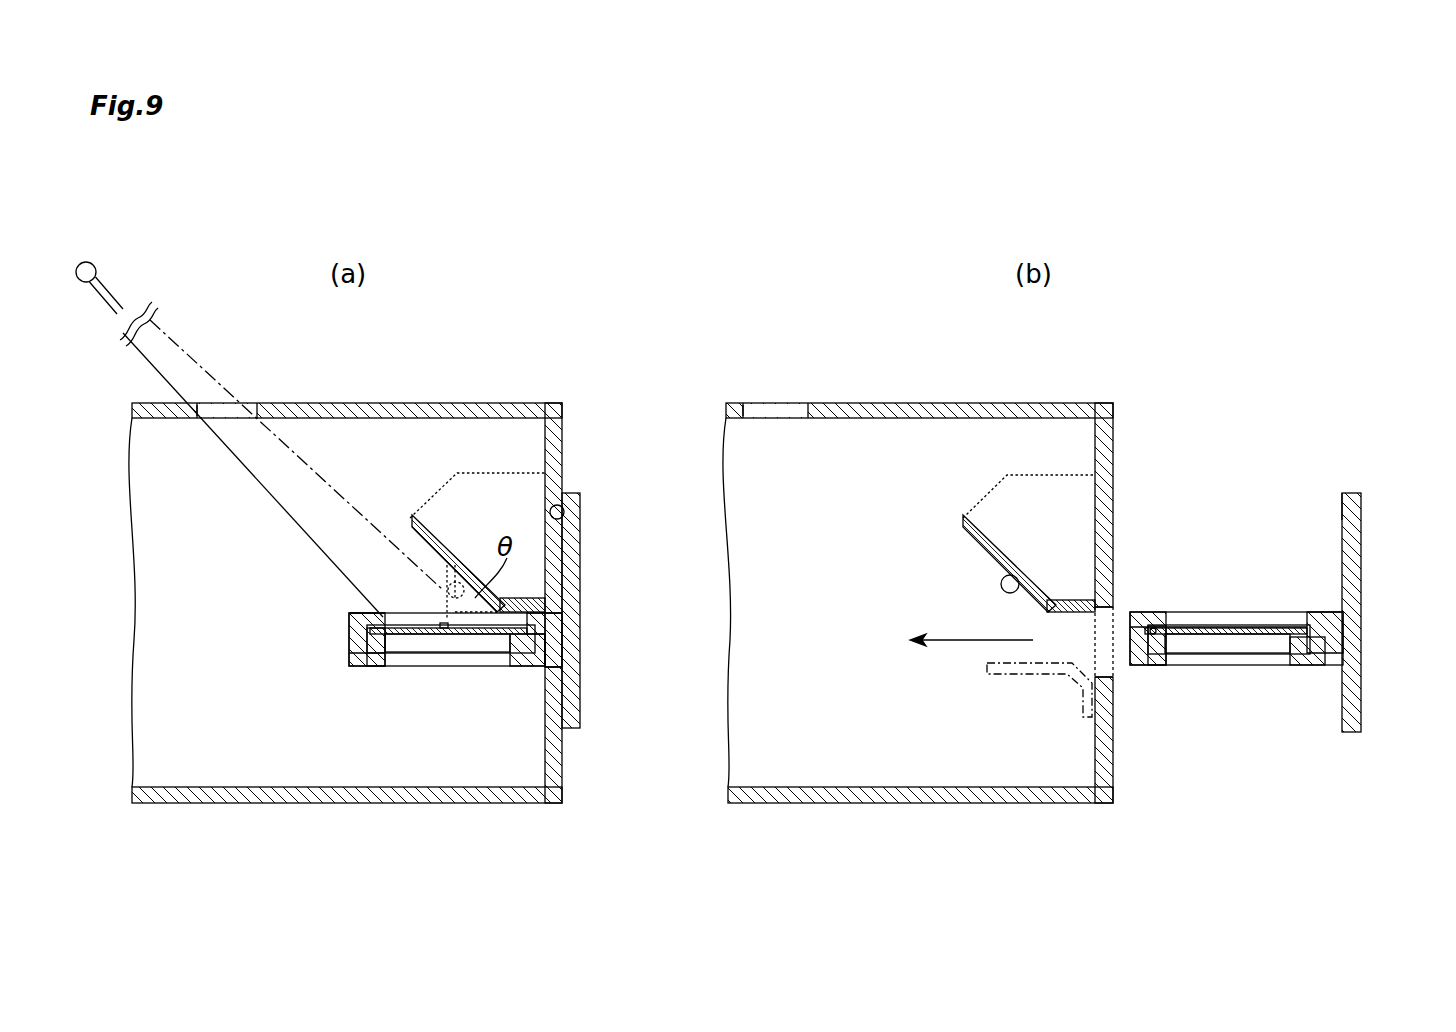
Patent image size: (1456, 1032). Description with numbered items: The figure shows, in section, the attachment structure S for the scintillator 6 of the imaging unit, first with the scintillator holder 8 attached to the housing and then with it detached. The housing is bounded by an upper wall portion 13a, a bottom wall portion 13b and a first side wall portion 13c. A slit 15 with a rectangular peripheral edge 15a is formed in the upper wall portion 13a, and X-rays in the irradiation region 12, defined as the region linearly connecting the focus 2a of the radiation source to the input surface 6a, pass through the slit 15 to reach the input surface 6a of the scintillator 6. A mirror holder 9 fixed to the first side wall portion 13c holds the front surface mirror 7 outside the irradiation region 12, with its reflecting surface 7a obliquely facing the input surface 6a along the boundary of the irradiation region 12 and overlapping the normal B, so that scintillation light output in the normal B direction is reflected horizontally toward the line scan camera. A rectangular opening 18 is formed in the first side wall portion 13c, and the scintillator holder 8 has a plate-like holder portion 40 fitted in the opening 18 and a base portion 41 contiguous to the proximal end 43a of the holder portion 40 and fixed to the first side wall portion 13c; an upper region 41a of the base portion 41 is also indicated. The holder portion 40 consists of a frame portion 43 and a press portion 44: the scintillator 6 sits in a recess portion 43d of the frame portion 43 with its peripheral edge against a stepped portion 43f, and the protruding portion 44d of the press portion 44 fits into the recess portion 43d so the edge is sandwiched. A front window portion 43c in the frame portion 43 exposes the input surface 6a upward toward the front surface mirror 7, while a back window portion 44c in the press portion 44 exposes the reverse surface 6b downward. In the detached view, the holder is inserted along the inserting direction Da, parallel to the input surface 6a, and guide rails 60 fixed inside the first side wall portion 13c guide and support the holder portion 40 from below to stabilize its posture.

The focus 2a is at (88, 262).
The irradiation region 12 is at (270, 460).
The upper wall portion 13a is at (370, 403).
The bottom wall portion 13b is at (345, 803).
The first side wall portion 13c is at (555, 770).
The slit 15 is at (228, 418).
The peripheral edge 15a is at (257, 410).
The opening 18 is at (565, 672).
The mirror holder 9 is at (540, 473).
The front surface mirror 7 is at (426, 552).
The reflecting surface 7a is at (460, 582).
The scintillator 6 is at (491, 704).
The input surface 6a is at (397, 624).
The reverse surface 6b is at (422, 654).
The holder portion 40 is at (775, 676).
The base portion 41 is at (584, 601).
The upper portion of mounting plate 41a is at (565, 510).
The frame portion 43 is at (349, 631).
The proximal end 43a is at (545, 632).
The front window portion 43c is at (505, 598).
The recess portion 43d is at (370, 610).
The stepped portion 43f is at (1160, 632).
The press portion 44 is at (349, 658).
The back window portion 44c is at (520, 670).
The protruding portion 44d is at (378, 667).
The guide rail 60 is at (1030, 677).
The scintillator holder 8 is at (1376, 463).
The normal B is at (462, 650).
The attachment structure S is at (491, 704).
The inserting direction Da is at (968, 638).